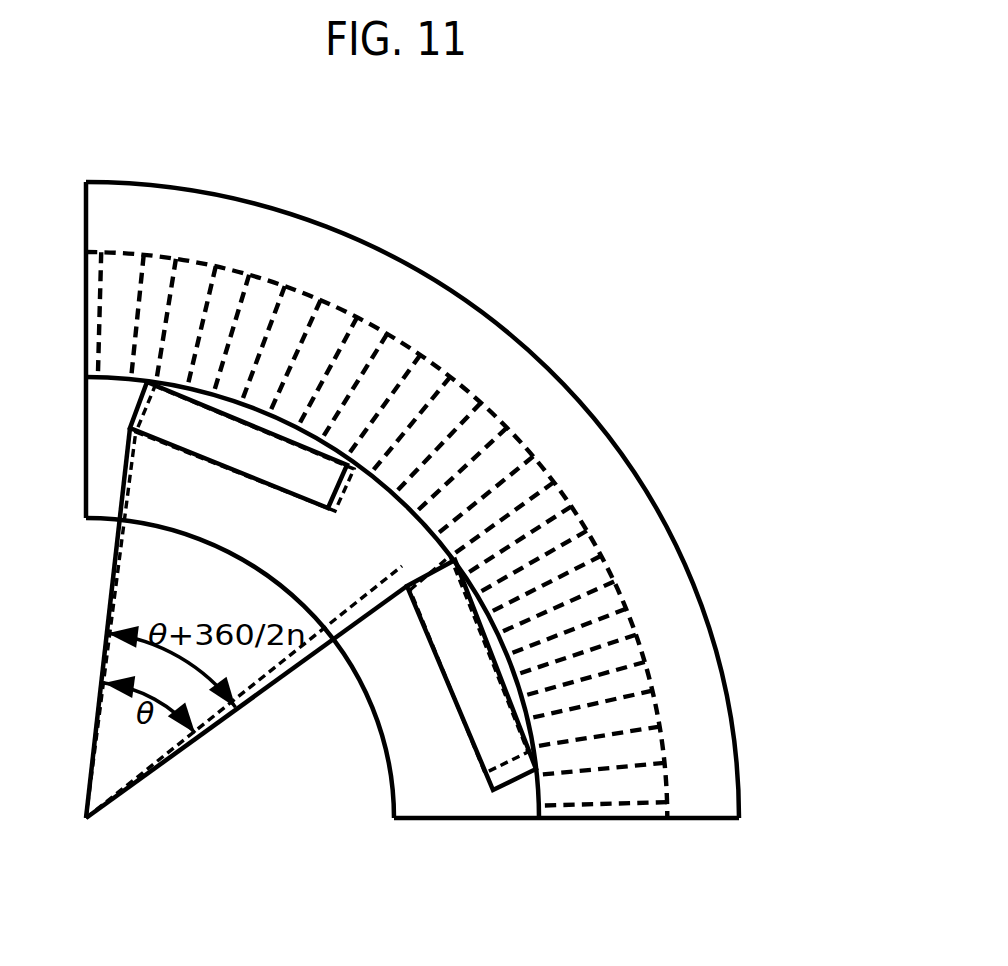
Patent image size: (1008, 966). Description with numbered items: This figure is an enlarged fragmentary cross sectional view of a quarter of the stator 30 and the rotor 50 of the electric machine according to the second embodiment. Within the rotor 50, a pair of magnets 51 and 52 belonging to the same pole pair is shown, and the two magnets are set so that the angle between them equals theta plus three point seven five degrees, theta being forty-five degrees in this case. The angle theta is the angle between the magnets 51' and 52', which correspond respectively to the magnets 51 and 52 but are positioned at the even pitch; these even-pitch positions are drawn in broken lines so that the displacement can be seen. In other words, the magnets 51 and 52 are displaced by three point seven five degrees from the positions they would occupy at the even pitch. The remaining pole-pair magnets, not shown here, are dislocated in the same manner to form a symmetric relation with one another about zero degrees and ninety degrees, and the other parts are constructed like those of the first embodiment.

The stator 30 is at (614, 848).
The rotor 50 is at (462, 848).
The magnet 51 is at (639, 675).
The magnet at even pitch 51' is at (611, 647).
The magnet 52 is at (335, 331).
The magnet at even pitch 52' is at (273, 328).